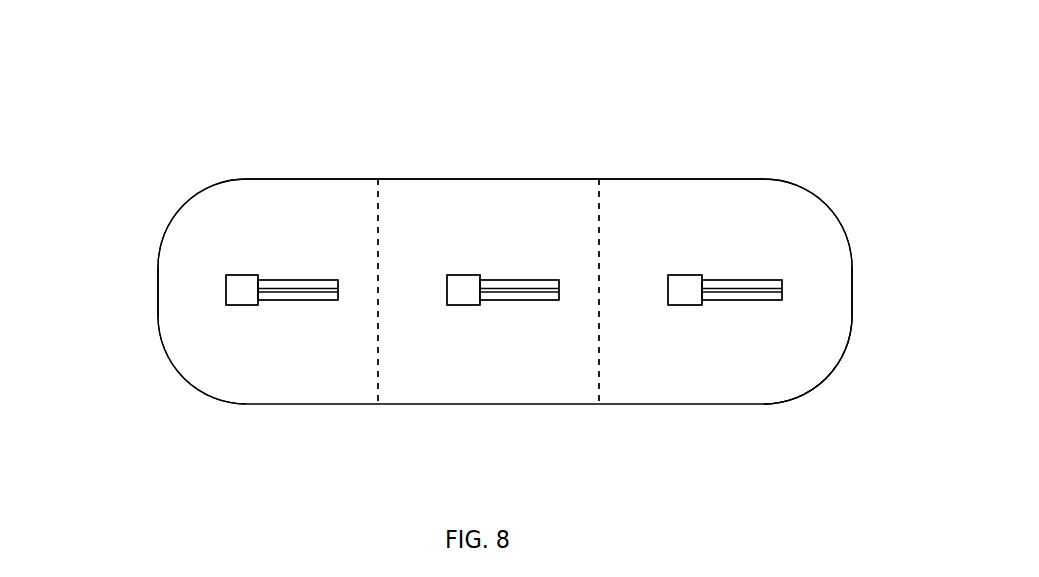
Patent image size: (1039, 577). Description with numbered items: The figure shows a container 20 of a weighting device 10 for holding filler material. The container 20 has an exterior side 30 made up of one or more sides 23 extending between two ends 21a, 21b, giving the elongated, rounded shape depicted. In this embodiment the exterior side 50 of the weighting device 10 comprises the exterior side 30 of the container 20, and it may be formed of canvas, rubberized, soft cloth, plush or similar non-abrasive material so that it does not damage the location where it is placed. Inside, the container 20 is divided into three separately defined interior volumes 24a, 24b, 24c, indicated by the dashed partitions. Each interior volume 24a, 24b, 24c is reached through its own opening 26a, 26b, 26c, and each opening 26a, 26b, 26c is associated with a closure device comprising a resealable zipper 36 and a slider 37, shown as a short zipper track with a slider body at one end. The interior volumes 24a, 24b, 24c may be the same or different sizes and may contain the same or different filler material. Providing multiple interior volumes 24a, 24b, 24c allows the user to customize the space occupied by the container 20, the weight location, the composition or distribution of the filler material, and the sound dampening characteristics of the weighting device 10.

The weighting device 10 is at (652, 103).
The container 20 is at (738, 178).
The end 21a is at (132, 319).
The end 21b is at (801, 402).
The side 23 is at (187, 332).
The interior volume 24a is at (263, 378).
The interior volume 24b is at (473, 382).
The interior volume 24c is at (682, 383).
The opening 26a is at (307, 280).
The opening 26b is at (497, 283).
The opening 26c is at (717, 283).
The exterior side of the container 30 is at (820, 275).
The resealable zipper 36 is at (312, 300).
The slider 37 is at (245, 305).
The exterior side of the weighting device 50 is at (360, 193).